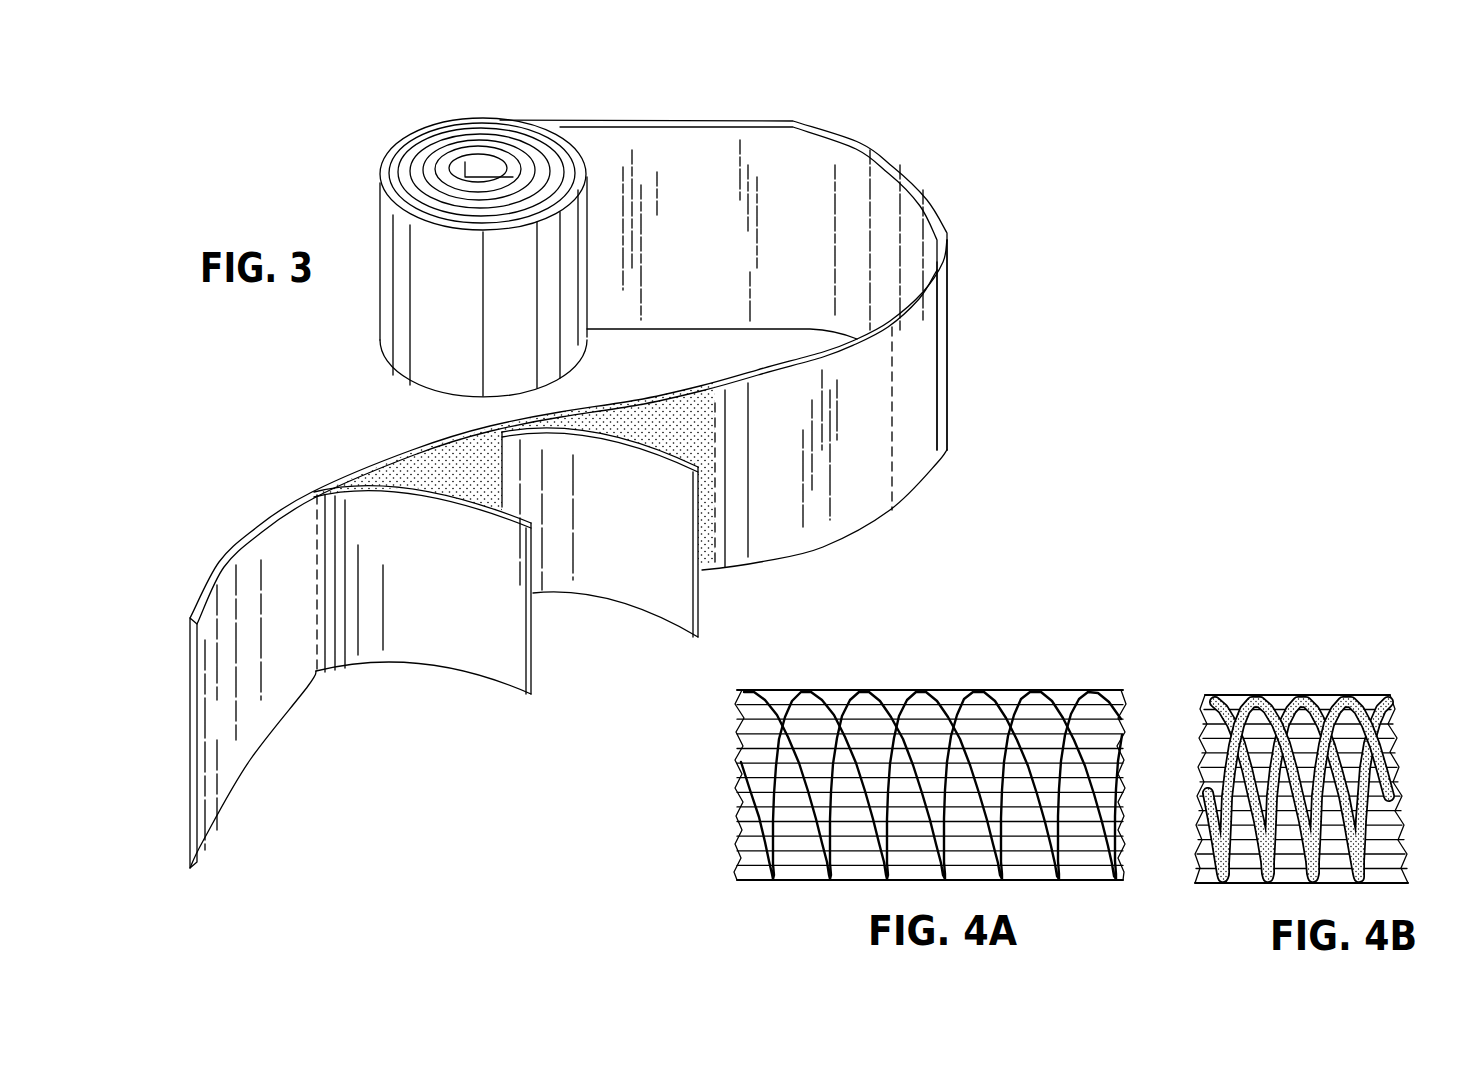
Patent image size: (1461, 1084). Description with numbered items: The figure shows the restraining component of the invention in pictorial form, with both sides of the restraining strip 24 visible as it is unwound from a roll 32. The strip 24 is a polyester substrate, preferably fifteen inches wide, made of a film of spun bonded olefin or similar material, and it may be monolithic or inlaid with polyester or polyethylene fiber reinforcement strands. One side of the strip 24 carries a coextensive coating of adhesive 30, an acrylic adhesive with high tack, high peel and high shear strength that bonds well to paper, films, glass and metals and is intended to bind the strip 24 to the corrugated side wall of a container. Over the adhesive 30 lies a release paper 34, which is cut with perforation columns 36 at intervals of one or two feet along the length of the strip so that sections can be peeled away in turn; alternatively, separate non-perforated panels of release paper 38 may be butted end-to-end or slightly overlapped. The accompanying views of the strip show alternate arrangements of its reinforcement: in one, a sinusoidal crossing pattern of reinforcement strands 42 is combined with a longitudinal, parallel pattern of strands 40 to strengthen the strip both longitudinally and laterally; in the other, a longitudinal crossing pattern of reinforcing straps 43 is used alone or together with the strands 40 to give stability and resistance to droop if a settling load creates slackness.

In FIG. 3, the restraining strip 24 is at (788, 108).
In FIG. 4A, the restraining strip 24 is at (826, 885).
In FIG. 4B, the restraining strip 24 is at (1247, 890).
In FIG. 3, the adhesive 30 is at (412, 456).
In FIG. 3, the roll 32 is at (434, 143).
In FIG. 3, the release paper 34 is at (932, 378).
In FIG. 3, the perforation columns 36 is at (893, 495).
In FIG. 3, the panels of release paper 38 is at (475, 657).
In FIG. 4A, the strands 40 is at (775, 690).
In FIG. 4B, the strands 40 is at (1280, 718).
In FIG. 4A, the reinforcement strands 42 is at (870, 693).
In FIG. 4B, the reinforcing straps 43 is at (1337, 877).